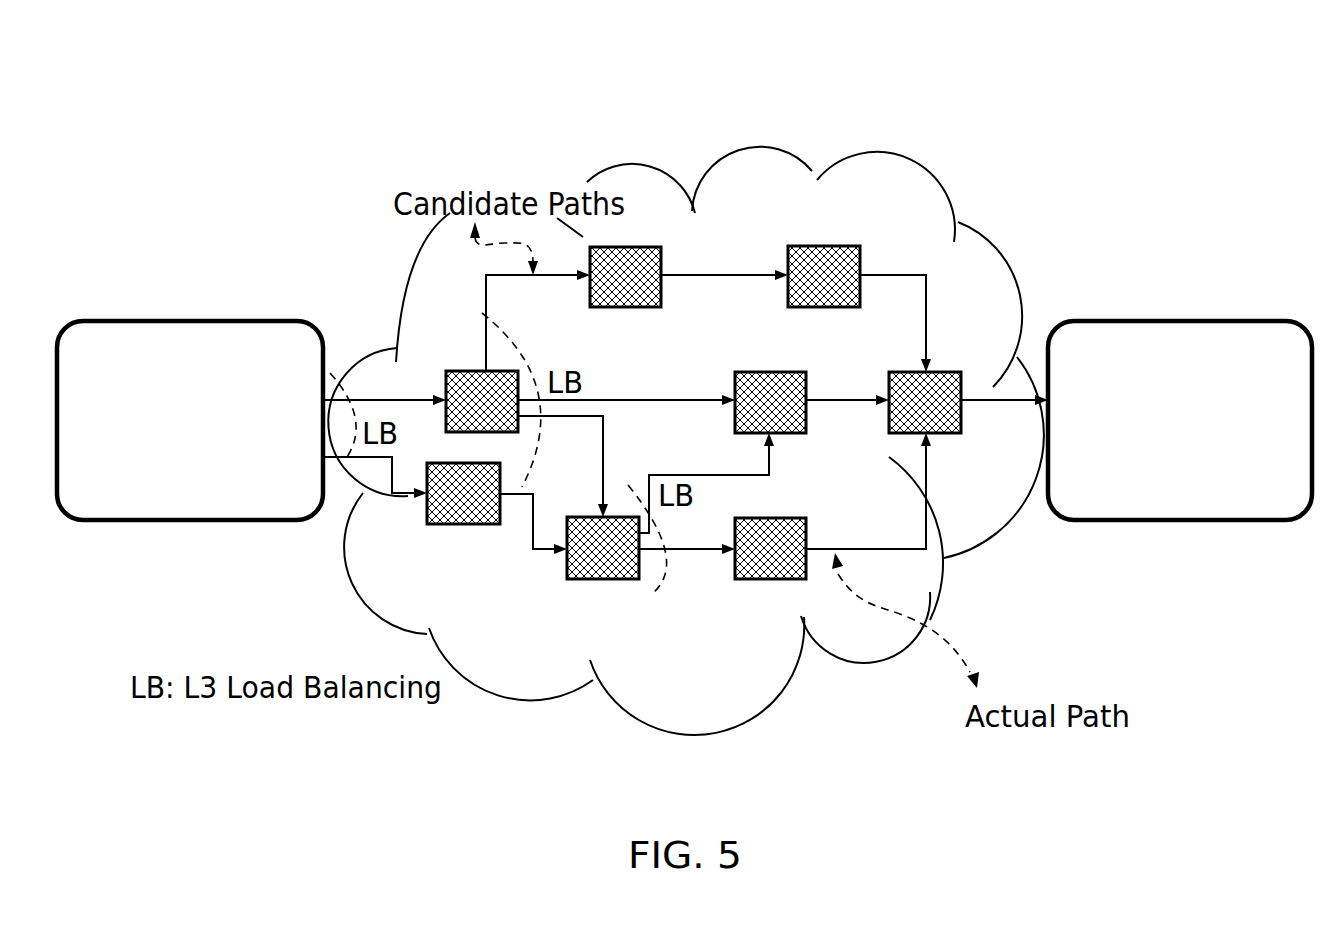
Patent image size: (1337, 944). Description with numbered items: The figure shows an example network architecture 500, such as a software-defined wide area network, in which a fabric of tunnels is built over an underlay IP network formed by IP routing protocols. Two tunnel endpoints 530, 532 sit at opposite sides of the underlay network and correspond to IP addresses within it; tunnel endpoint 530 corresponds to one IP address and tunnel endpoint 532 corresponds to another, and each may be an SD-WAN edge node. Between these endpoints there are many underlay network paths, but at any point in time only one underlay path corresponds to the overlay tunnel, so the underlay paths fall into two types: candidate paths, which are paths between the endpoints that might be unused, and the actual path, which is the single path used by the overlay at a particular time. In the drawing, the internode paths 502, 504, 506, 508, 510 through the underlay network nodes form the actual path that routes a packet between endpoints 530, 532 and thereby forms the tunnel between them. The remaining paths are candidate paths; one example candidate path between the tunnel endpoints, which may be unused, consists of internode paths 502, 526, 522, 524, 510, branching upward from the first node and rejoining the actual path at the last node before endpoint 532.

The network architecture 500 is at (398, 110).
The internode path 502 is at (380, 392).
The internode path 504 is at (605, 447).
The internode path 506 is at (690, 520).
The internode path 508 is at (870, 547).
The internode path 510 is at (1007, 403).
The internode path 522 is at (717, 275).
The internode path 524 is at (890, 275).
The internode path 526 is at (484, 298).
The tunnel endpoint 530 is at (190, 520).
The tunnel endpoint 532 is at (1185, 520).